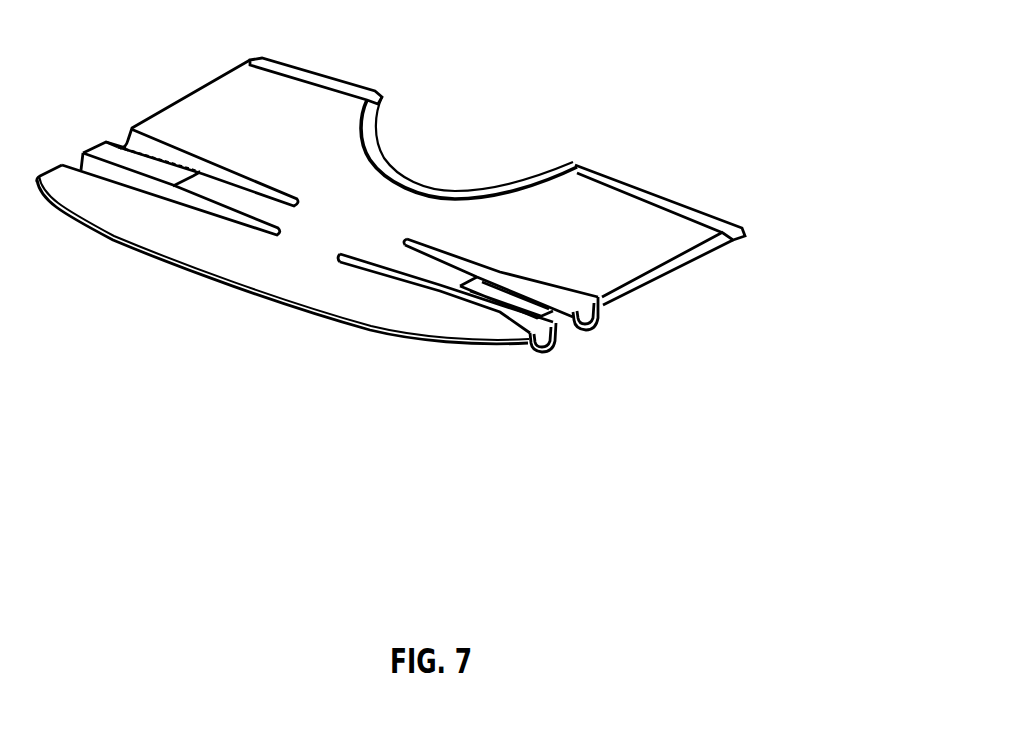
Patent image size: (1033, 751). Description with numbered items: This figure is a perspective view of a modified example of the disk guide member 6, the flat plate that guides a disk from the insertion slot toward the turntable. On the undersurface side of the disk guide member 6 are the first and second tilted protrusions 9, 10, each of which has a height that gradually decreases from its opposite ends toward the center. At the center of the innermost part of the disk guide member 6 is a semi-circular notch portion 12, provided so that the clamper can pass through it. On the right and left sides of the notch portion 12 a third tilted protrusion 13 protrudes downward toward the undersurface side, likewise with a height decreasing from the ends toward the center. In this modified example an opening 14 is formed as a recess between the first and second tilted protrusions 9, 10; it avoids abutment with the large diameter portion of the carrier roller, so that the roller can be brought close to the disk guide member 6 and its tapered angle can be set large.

The disk guide member 6 is at (263, 298).
The first tilted protrusion 9 is at (557, 347).
The second tilted protrusion 10 is at (602, 317).
The notch portion 12 is at (422, 177).
The third tilted protrusion 13 is at (330, 80).
The opening 14 is at (144, 167).